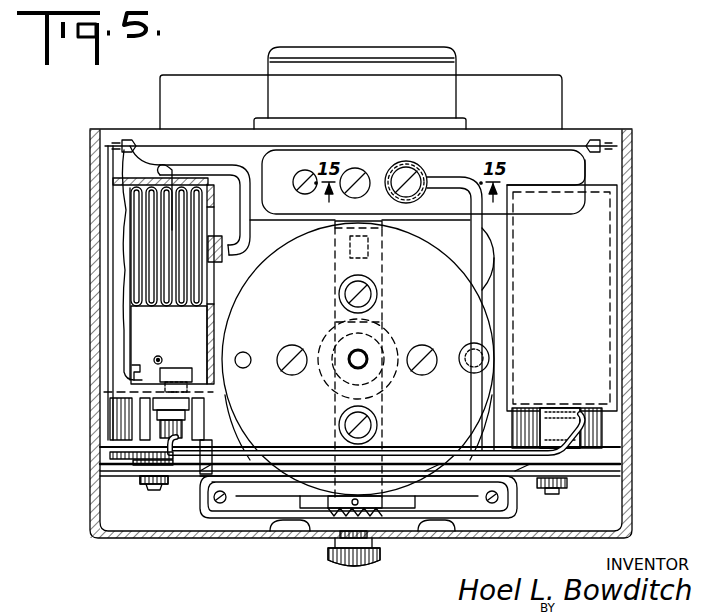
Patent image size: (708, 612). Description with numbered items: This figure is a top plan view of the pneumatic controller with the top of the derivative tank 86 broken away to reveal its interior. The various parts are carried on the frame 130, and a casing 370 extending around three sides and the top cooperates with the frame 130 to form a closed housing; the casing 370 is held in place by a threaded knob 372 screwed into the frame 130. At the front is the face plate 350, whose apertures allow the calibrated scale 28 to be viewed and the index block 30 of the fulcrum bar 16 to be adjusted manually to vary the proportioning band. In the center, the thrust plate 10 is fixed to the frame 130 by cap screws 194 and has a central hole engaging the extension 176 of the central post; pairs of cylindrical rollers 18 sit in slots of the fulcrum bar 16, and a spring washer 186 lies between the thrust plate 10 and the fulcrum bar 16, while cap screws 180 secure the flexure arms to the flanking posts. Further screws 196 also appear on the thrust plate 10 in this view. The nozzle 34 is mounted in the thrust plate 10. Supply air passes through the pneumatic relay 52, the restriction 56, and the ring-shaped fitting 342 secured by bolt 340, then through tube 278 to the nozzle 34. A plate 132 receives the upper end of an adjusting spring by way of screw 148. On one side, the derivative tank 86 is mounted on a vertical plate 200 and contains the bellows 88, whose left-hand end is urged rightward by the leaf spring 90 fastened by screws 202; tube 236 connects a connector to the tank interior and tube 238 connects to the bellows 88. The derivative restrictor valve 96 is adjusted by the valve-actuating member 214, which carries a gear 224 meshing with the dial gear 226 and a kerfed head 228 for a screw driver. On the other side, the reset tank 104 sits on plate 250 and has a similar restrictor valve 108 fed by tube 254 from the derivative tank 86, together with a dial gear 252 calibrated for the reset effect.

The thrust plate 10 is at (487, 385).
The fulcrum bar 16 is at (330, 258).
The cylindrical rollers 18 is at (380, 245).
The calibrated scale 28 is at (415, 486).
The index block 30 is at (378, 515).
The nozzle 34 is at (486, 358).
The pneumatic relay 52 is at (345, 46).
The restriction 56 is at (353, 167).
The derivative tank 86 is at (132, 172).
The bellows 88 is at (165, 307).
The leaf spring 90 is at (129, 330).
The restrictor valve 96 is at (122, 412).
The reset tank 104 is at (585, 185).
The restrictor valve 108 is at (585, 426).
The frame 130 is at (170, 129).
The plate 132 is at (488, 273).
The screw 148 is at (500, 500).
The extension 176 is at (364, 354).
The cap screws 180 is at (345, 294).
The spring washer 186 is at (380, 385).
The cap screws 194 is at (282, 352).
The screw 196 is at (430, 347).
The vertical plate 200 is at (107, 228).
The screws 202 is at (140, 378).
The valve-actuating member 214 is at (158, 448).
The gear 224 is at (138, 478).
The dial gear 226 is at (150, 450).
The kerfed head 228 is at (152, 492).
The tube 236 is at (163, 359).
The tube 238 is at (229, 165).
The plate 250 is at (620, 246).
The dial gear 252 is at (595, 456).
The tube 254 is at (292, 456).
The tube 278 is at (477, 252).
The bolt 340 is at (406, 180).
The ring-shaped fitting 342 is at (418, 188).
The face plate 350 is at (600, 484).
The casing 370 is at (176, 539).
The threaded knob 372 is at (340, 562).